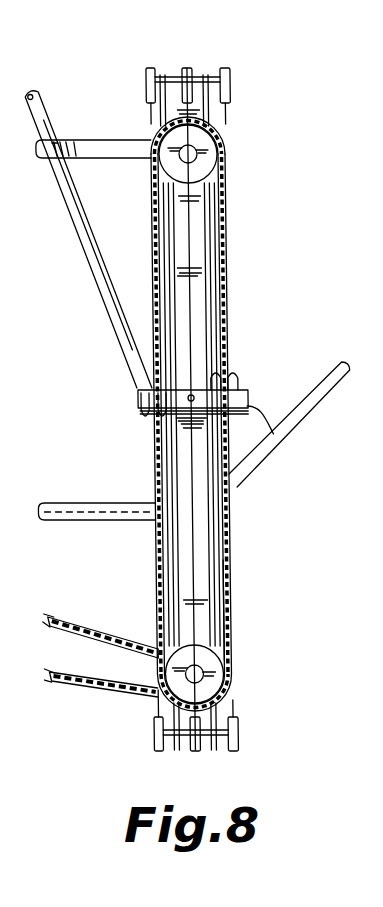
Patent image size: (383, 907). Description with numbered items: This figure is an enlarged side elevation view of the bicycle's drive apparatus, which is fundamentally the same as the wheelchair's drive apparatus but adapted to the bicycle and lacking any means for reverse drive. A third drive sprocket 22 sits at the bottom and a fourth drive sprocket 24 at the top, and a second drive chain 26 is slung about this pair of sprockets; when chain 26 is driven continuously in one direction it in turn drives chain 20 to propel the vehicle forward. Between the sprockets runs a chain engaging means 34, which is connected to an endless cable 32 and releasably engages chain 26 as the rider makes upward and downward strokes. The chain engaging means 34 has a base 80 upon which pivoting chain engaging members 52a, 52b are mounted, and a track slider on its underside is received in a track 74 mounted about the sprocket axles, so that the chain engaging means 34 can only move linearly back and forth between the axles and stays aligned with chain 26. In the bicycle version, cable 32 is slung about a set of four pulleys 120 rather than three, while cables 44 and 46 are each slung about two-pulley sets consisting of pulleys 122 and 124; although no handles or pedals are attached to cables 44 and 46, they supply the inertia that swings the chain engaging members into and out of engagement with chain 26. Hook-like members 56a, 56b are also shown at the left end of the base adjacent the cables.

The chain 20 is at (82, 626).
The third drive sprocket 22 is at (226, 676).
The fourth drive sprocket 24 is at (217, 147).
The second drive chain 26 is at (226, 226).
The endless cable 32 is at (195, 552).
The chain engaging means 34 is at (270, 436).
The cable 44 is at (232, 388).
The cable 46 is at (150, 198).
The pivoting chain engaging member 52a is at (238, 390).
The pivoting chain engaging member 52b is at (214, 382).
The hook 56a is at (160, 418).
The hook 56b is at (146, 408).
The track 74 is at (211, 618).
The base 80 is at (164, 385).
The pulleys 120 is at (187, 67).
The pulley 122 is at (151, 67).
The pulley 124 is at (227, 67).